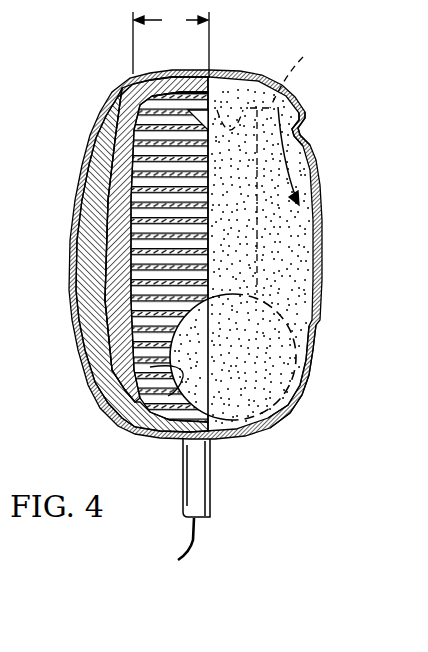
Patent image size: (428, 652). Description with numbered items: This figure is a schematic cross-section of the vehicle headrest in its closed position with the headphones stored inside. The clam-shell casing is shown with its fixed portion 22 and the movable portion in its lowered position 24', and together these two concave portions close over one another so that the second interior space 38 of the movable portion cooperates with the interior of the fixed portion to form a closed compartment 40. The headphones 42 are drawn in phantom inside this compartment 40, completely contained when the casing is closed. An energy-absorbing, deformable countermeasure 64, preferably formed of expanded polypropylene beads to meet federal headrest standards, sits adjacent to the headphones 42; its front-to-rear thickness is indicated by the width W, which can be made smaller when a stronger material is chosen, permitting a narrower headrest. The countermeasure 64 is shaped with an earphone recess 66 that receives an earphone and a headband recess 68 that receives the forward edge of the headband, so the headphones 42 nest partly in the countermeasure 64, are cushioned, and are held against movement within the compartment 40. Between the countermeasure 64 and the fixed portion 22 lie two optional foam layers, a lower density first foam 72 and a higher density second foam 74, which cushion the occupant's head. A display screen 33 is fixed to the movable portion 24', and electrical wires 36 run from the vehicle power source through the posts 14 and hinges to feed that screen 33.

The post 14 is at (210, 475).
The fixed portion of the casing 22 is at (112, 85).
The movable portion of the casing in lowered position 24' is at (239, 225).
The display screen 33 is at (319, 177).
The electrical wires 36 is at (200, 537).
The second interior space 38 is at (301, 117).
The closed compartment 40 is at (87, 173).
The headphones 42 is at (274, 170).
The countermeasure 64 is at (107, 204).
The earphone recess 66 is at (150, 367).
The headband recess 68 is at (183, 73).
The first foam 72 is at (100, 107).
The second foam 74 is at (95, 128).
The width of the countermeasure W is at (171, 43).